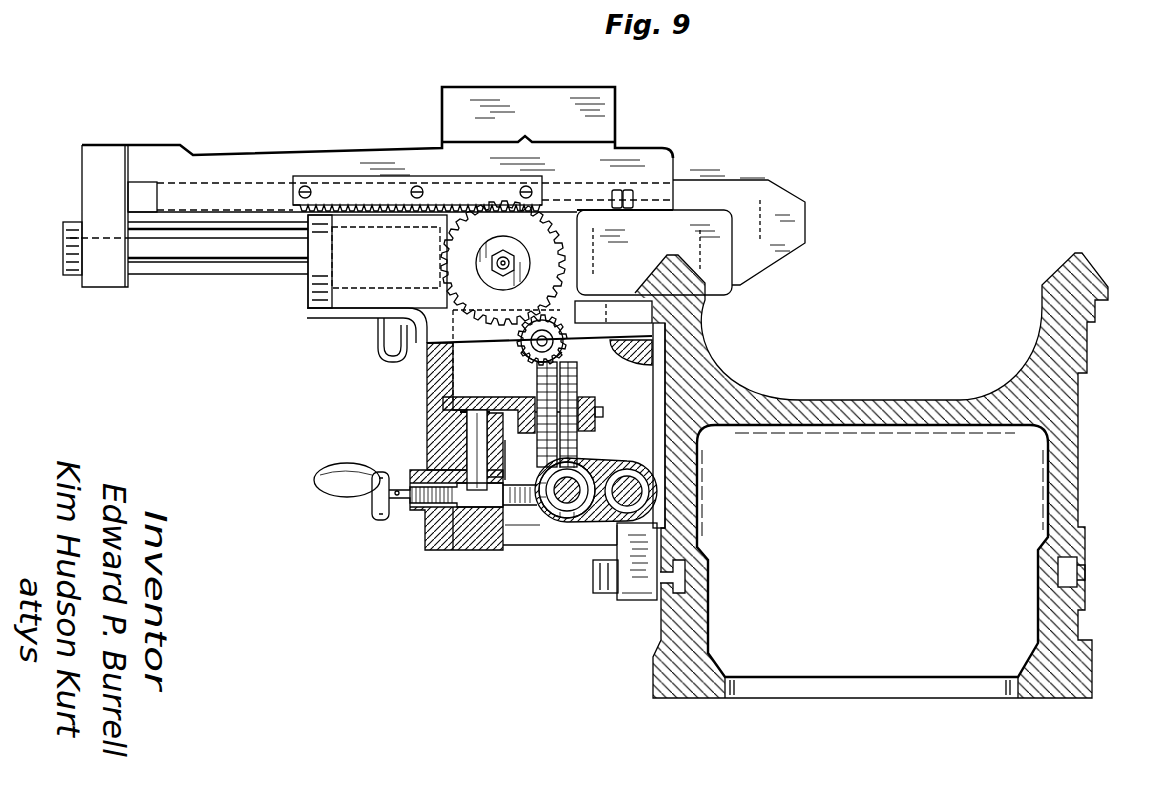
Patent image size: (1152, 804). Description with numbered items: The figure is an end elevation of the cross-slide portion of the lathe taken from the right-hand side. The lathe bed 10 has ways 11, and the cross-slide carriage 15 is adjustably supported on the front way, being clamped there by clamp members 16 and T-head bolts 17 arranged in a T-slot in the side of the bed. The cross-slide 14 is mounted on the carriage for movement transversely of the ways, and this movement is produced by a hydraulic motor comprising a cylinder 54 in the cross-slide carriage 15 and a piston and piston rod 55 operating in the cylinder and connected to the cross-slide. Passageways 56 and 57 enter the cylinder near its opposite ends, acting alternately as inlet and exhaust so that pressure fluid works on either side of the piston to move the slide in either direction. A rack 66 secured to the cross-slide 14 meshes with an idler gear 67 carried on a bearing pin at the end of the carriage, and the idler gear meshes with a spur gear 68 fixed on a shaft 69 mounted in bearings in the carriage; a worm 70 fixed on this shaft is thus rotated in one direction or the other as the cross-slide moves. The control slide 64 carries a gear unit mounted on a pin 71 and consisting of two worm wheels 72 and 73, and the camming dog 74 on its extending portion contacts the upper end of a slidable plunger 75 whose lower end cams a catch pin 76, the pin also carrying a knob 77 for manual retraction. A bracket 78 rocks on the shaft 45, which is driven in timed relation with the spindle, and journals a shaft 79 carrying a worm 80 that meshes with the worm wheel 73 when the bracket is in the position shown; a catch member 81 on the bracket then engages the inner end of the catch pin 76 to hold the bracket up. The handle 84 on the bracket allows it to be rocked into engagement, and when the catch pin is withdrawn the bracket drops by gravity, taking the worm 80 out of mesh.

The bed 10 is at (1082, 475).
The ways 11 is at (1095, 272).
The cross-slide 14 is at (262, 145).
The cross-slide carriage 15 is at (427, 380).
The clamp members 16 is at (690, 212).
The T-head bolts 17 is at (596, 578).
The shaft 45 is at (628, 461).
The cylinder 54 is at (340, 320).
The piston and piston rod 55 is at (277, 262).
The passageway 56 is at (617, 268).
The passageway 57 is at (385, 288).
The control slide 64 is at (585, 397).
The rack 66 is at (478, 185).
The idler gear 67 is at (450, 243).
The spur gear 68 is at (515, 333).
The shaft 69 is at (533, 350).
The worm 70 is at (565, 350).
The pin 71 is at (603, 412).
The worm wheel 72 is at (538, 440).
The worm wheel 73 is at (578, 443).
The camming dog 74 is at (466, 420).
The slidable plunger 75 is at (477, 445).
The catch pin 76 is at (459, 550).
The knob 77 is at (378, 512).
The bracket 78 is at (610, 522).
The shaft 79 is at (556, 512).
The worm 80 is at (566, 515).
The catch member 81 is at (512, 507).
The handle 84 is at (325, 490).